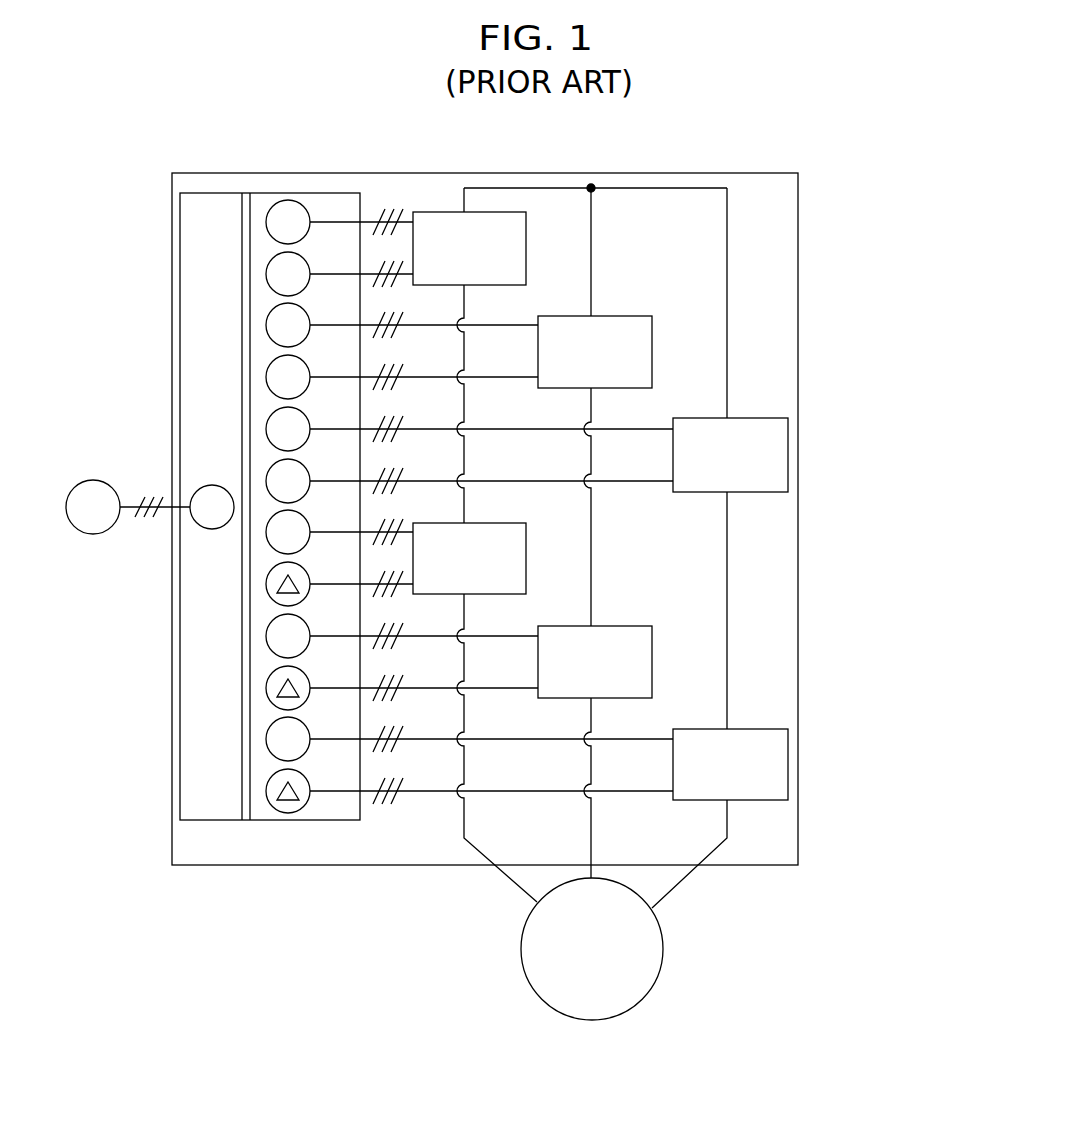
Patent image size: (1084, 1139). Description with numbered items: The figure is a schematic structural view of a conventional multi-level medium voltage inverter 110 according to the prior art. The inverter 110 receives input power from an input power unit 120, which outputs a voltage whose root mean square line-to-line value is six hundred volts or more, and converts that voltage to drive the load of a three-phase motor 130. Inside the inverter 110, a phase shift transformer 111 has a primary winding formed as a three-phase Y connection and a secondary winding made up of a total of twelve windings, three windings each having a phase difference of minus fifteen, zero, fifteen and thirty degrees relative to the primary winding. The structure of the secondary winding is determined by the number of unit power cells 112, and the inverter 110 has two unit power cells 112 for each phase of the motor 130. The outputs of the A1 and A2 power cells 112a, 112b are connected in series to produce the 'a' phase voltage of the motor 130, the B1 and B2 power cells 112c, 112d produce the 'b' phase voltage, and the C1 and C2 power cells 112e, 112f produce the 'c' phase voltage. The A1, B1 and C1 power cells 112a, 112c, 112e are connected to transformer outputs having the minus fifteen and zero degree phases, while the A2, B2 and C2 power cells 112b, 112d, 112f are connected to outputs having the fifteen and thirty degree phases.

The inverter 110 is at (488, 173).
The phase shift transformer 111 is at (248, 193).
The unit power cells 112 is at (671, 546).
The A1 power cell 112a is at (527, 247).
The A2 power cell 112b is at (527, 560).
The B1 power cell 112c is at (653, 350).
The B2 power cell 112d is at (653, 661).
The C1 power cell 112e is at (789, 455).
The C2 power cell 112f is at (764, 764).
The input power unit 120 is at (93, 480).
The three-phase motor 130 is at (663, 948).